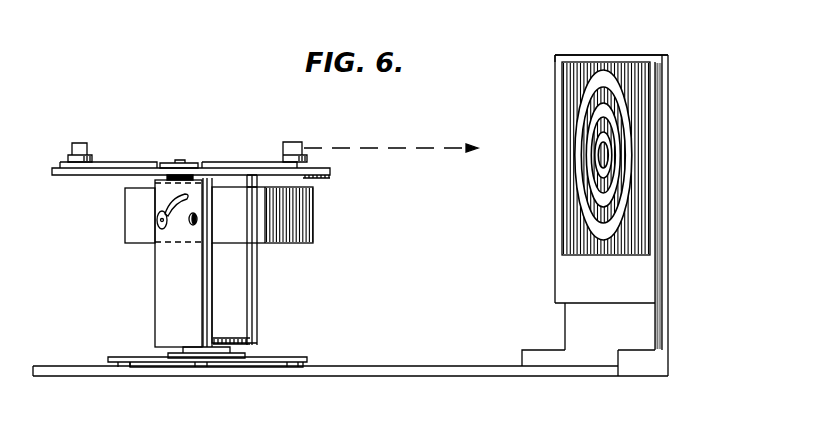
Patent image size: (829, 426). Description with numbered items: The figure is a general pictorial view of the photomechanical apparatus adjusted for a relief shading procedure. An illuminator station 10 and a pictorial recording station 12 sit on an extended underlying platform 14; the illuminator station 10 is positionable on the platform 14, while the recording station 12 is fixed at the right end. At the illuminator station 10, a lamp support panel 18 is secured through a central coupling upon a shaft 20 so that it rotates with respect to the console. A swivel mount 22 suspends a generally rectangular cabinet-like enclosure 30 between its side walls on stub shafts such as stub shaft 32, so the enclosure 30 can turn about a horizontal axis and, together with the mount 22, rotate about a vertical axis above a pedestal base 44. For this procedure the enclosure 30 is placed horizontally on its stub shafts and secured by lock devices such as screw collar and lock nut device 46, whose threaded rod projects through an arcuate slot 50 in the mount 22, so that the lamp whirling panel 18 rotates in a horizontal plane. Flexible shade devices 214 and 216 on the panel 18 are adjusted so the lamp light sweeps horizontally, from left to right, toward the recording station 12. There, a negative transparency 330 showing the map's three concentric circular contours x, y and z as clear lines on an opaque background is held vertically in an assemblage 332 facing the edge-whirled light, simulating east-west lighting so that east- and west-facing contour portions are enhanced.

The illuminator station 10 is at (238, 150).
The pictorial recording station 12 is at (672, 140).
The extended underlying platform 14 is at (420, 367).
The lamp support panel 18 is at (143, 162).
The shaft 20 is at (180, 161).
The swivel mount 22 is at (155, 300).
The cabinet-like enclosure 30 is at (303, 204).
The stub shaft 32 is at (192, 227).
The pedestal base 44 is at (150, 357).
The screw collar and lock nut device 46 is at (160, 229).
The arcuate slot 50 is at (166, 208).
The flexible shade device 214 is at (73, 143).
The flexible shade device 216 is at (291, 142).
The negative transparency 330 is at (572, 78).
The assemblage 332 is at (600, 55).
The circular contour X is at (588, 97).
The circular contour Y is at (595, 120).
The circular contour Z is at (600, 155).